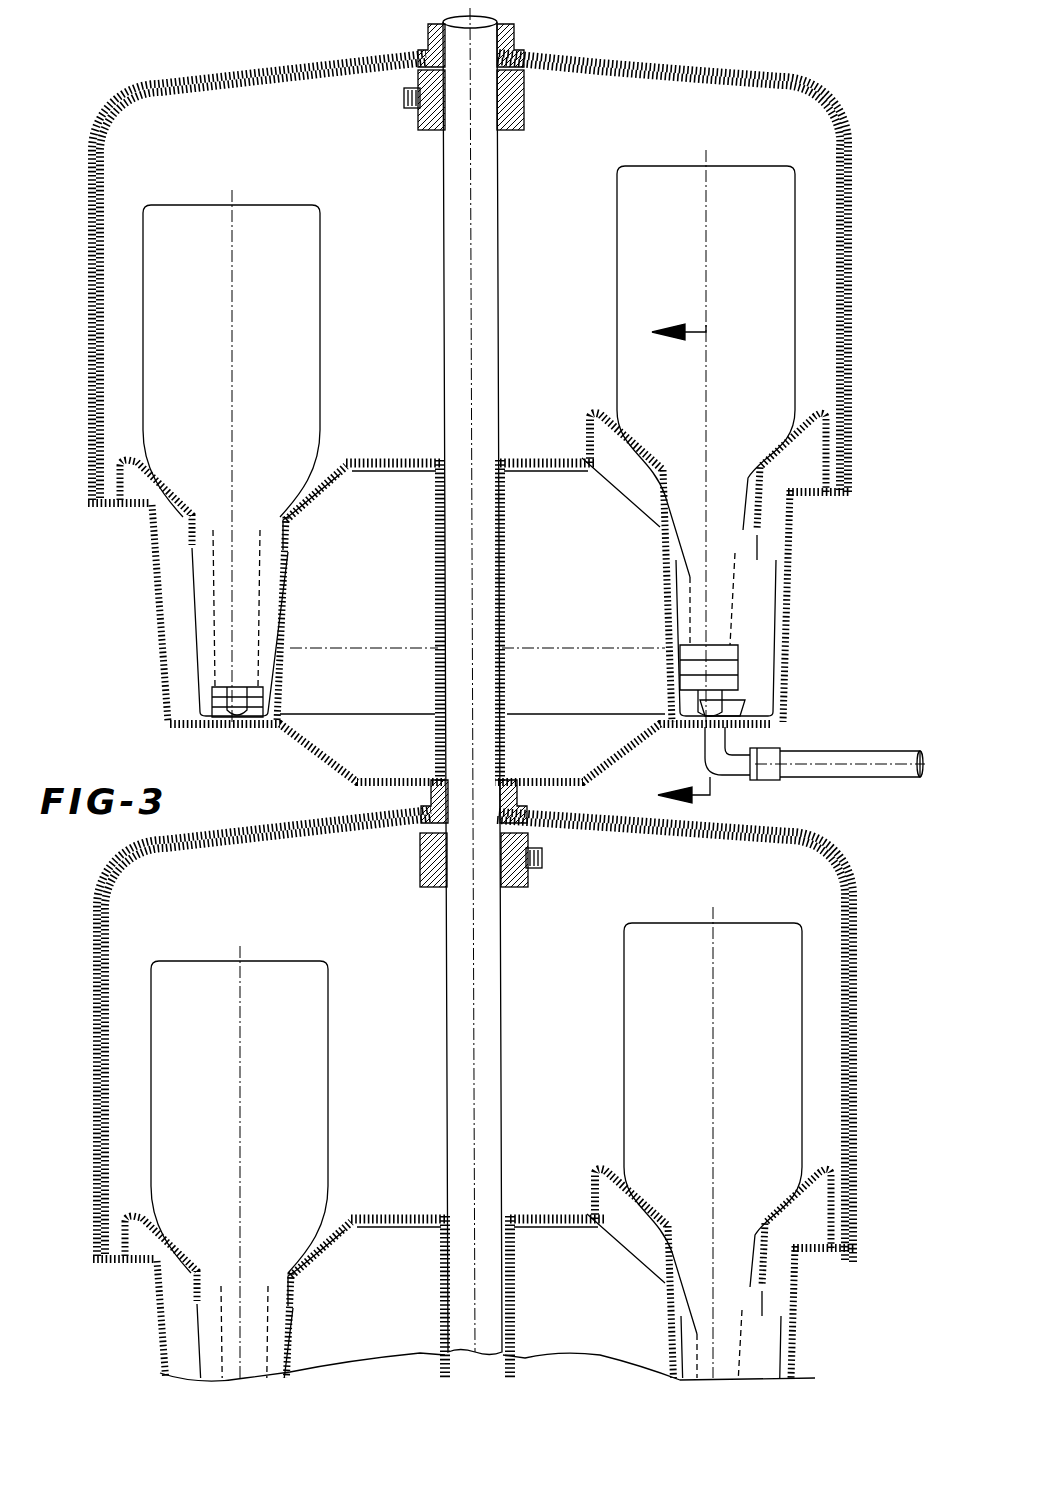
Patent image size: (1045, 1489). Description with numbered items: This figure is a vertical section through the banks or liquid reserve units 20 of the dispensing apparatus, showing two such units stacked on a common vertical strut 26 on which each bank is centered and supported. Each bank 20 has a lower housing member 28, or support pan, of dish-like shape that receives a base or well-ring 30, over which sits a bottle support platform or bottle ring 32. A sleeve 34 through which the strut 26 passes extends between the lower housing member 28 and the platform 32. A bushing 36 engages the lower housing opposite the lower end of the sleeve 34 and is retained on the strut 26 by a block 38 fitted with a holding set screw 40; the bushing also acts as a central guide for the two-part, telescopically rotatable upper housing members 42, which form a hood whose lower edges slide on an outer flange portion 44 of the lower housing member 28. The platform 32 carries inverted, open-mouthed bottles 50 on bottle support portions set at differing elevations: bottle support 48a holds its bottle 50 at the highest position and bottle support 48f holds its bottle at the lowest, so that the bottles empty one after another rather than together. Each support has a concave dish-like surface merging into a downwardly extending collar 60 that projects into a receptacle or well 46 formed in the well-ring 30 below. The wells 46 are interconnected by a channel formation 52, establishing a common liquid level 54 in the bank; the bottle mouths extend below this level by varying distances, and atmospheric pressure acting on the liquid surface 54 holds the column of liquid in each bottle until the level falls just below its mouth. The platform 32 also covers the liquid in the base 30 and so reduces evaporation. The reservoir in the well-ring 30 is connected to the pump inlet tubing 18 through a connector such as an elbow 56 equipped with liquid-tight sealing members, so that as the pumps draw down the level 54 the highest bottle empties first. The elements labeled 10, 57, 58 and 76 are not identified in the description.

The dispensing apparatus 10 is at (85, 115).
The pump inlet tubing 18 is at (850, 738).
The bank or liquid reserve unit 20 is at (766, 72).
The strut 26 is at (445, 184).
The lower housing member 28 is at (150, 612).
The base or well-ring 30 is at (531, 469).
The bottle support platform 32 is at (543, 459).
The sleeve 34 is at (508, 576).
The bushing 36 is at (509, 31).
The block 38 is at (510, 130).
The holding set screw 40 is at (413, 108).
The upper housing members 42 is at (647, 40).
The outer flange portion 44 is at (92, 508).
The receptacles or wells 46 is at (283, 590).
The bottle support 48a is at (624, 428).
The bottle support 48f is at (330, 456).
The bottle 50 is at (199, 311).
The channel formation 52 is at (222, 626).
The common liquid level 54 is at (347, 624).
The elbow 56 is at (703, 753).
The spout 57 is at (733, 709).
The funnel rim 58 is at (160, 503).
The collar 60 is at (297, 521).
The insulation layer 76 is at (380, 470).